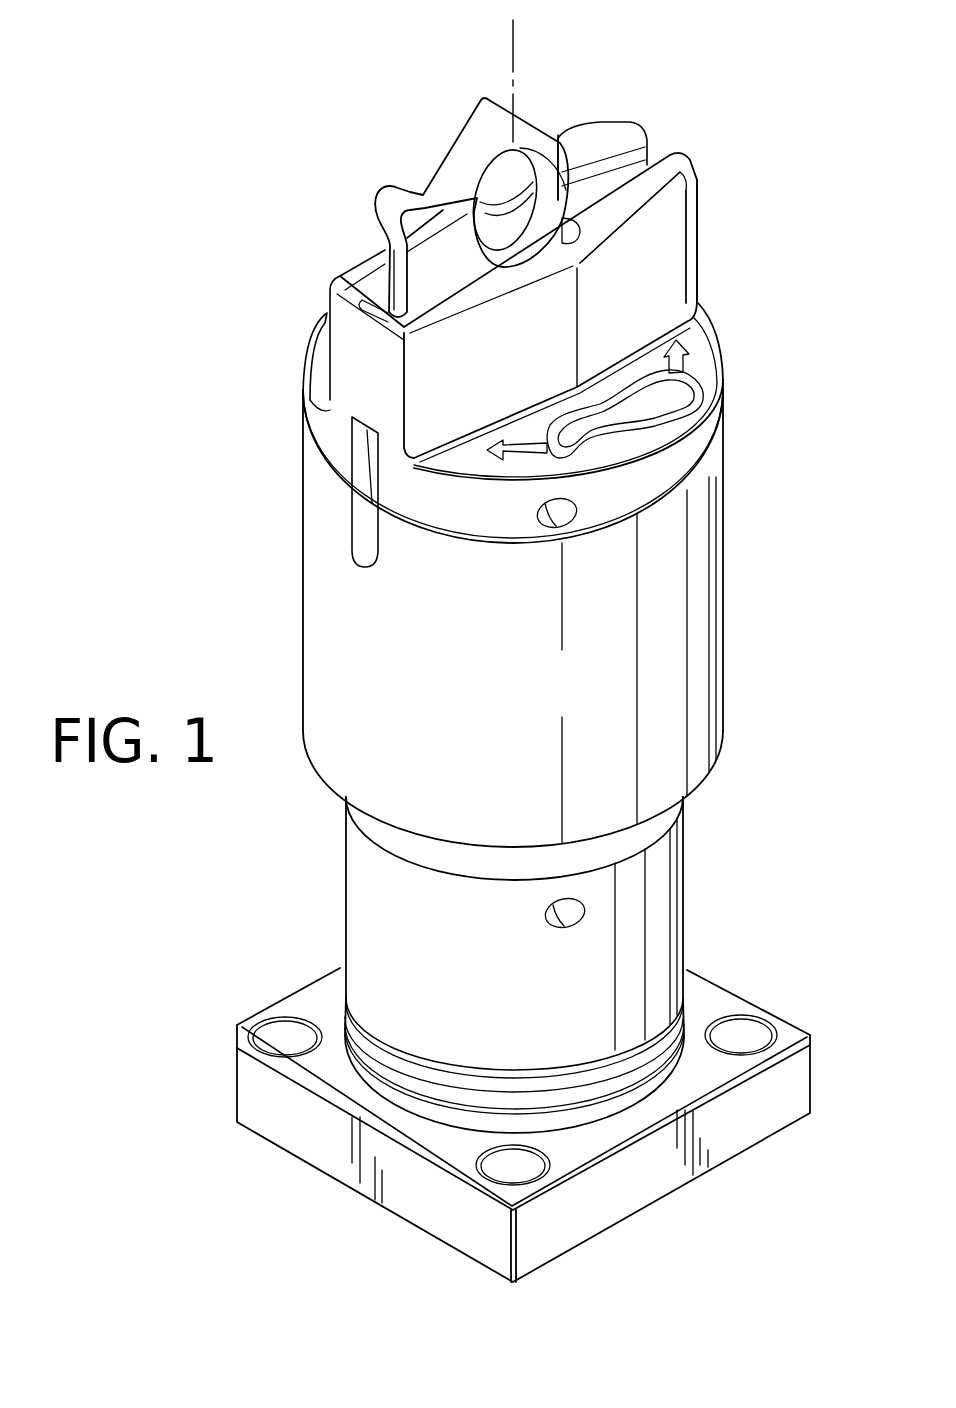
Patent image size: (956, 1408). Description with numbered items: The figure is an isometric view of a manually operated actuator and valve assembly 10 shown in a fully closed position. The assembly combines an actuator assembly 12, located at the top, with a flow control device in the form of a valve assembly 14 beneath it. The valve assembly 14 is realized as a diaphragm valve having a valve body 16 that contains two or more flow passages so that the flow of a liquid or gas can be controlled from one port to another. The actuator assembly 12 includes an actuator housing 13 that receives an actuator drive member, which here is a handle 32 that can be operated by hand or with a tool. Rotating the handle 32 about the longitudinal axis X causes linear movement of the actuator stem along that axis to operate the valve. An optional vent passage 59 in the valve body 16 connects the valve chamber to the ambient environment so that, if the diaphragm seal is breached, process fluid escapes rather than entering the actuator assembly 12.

The actuator and valve assembly 10 is at (257, 195).
The actuator assembly 12 is at (252, 483).
The actuator housing 13 is at (722, 578).
The valve assembly 14 is at (255, 882).
The valve body 16 is at (683, 896).
The handle 32 is at (695, 241).
The vent passage 59 is at (576, 926).
The longitudinal axis X is at (515, 43).